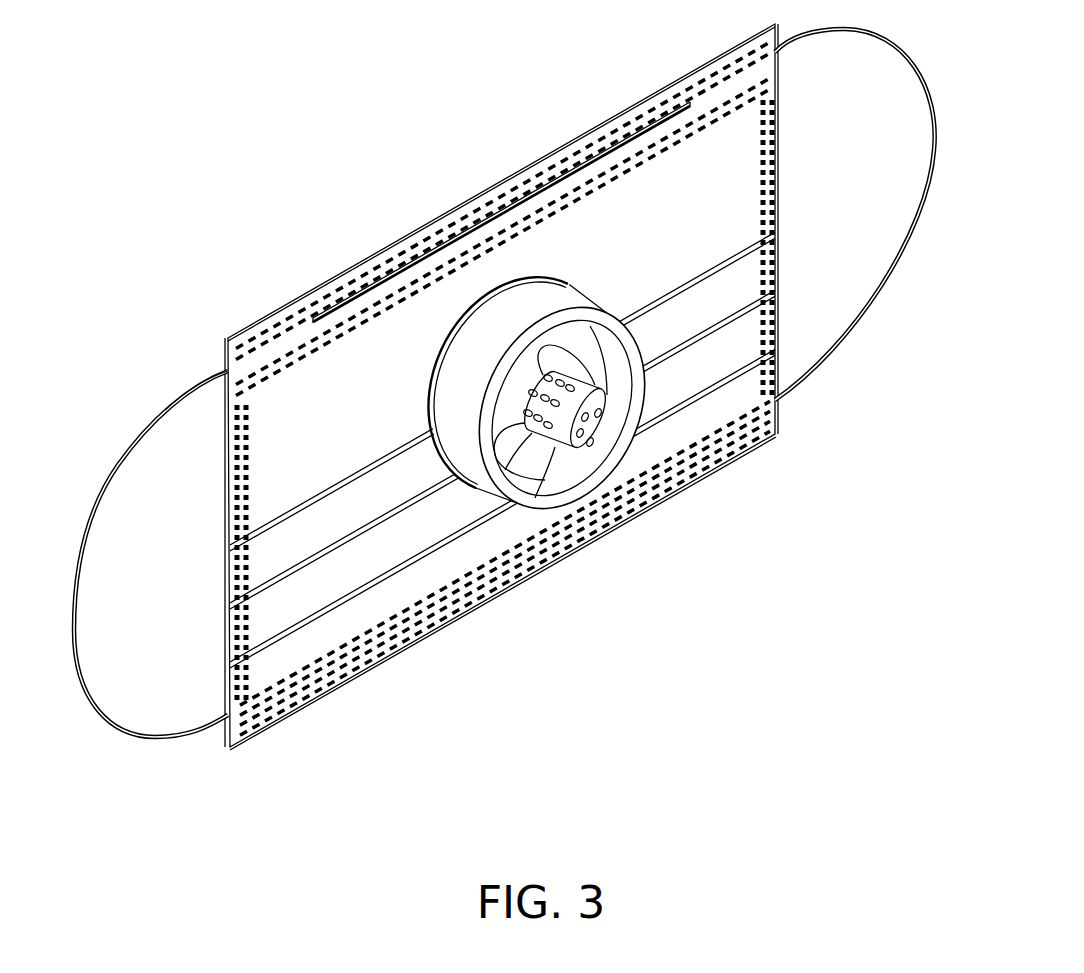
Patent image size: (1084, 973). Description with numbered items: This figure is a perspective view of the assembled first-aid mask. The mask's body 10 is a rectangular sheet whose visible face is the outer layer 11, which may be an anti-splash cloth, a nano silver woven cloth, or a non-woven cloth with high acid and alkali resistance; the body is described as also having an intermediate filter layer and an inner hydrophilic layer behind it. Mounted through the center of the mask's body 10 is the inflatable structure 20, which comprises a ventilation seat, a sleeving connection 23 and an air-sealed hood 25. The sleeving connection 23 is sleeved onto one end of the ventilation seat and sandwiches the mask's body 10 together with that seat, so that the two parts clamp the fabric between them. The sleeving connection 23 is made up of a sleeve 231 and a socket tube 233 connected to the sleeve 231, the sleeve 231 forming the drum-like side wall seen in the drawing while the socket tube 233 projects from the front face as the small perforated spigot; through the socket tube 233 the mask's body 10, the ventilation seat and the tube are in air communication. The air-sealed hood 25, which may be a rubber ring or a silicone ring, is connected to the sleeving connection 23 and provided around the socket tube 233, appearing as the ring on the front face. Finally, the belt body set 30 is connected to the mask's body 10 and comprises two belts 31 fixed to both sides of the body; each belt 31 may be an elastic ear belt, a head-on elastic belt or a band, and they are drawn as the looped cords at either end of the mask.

The mask's body 10 is at (410, 653).
The outer layer 11 is at (718, 187).
The inflatable structure 20 is at (516, 396).
The sleeving connection 23 is at (512, 297).
The sleeve 231 is at (462, 355).
The socket tube 233 is at (548, 450).
The air-sealed hood 25 is at (472, 463).
The belt body set 30 is at (125, 452).
The belt 31 is at (182, 400).